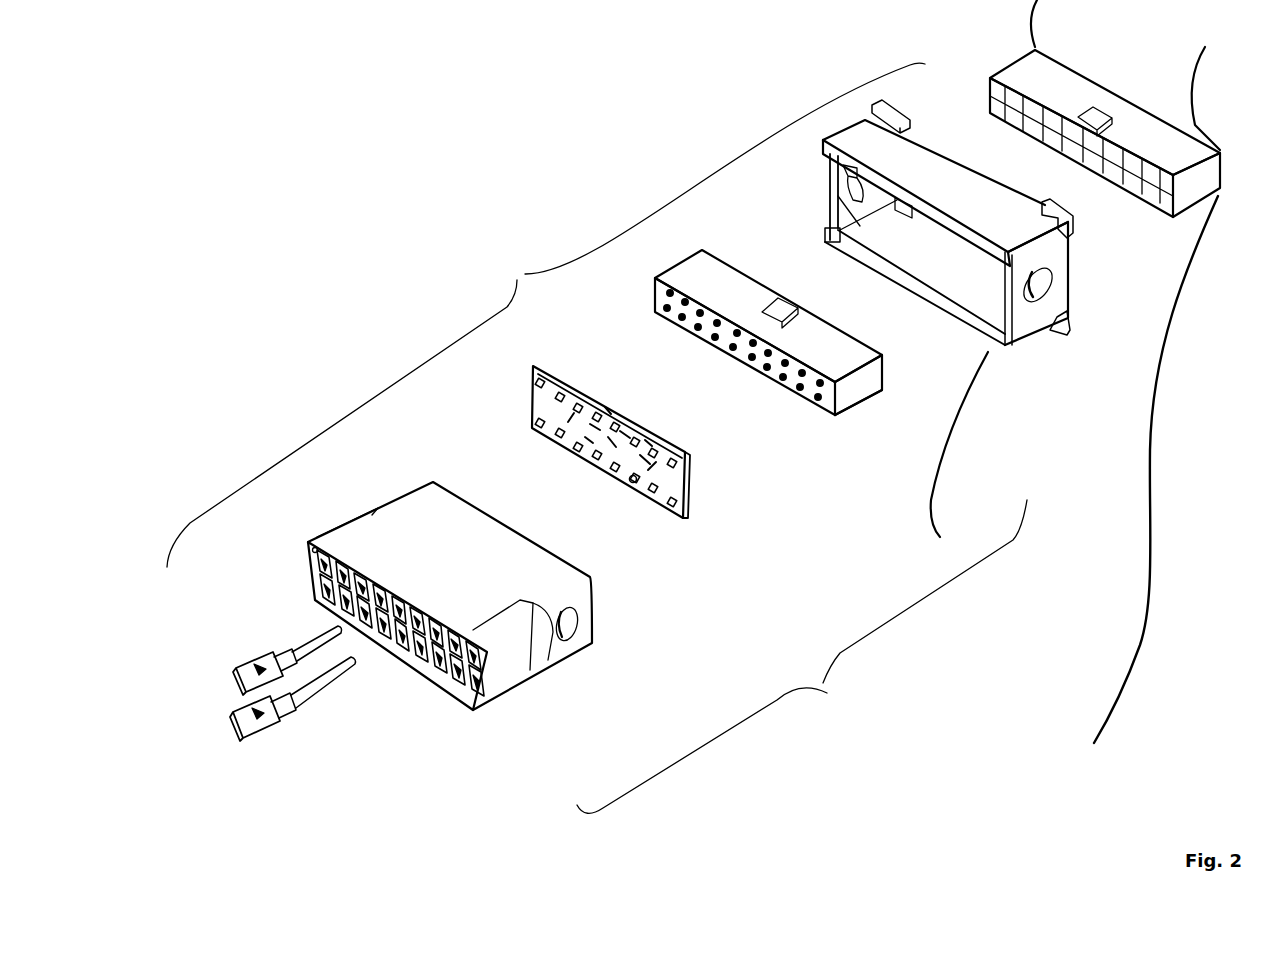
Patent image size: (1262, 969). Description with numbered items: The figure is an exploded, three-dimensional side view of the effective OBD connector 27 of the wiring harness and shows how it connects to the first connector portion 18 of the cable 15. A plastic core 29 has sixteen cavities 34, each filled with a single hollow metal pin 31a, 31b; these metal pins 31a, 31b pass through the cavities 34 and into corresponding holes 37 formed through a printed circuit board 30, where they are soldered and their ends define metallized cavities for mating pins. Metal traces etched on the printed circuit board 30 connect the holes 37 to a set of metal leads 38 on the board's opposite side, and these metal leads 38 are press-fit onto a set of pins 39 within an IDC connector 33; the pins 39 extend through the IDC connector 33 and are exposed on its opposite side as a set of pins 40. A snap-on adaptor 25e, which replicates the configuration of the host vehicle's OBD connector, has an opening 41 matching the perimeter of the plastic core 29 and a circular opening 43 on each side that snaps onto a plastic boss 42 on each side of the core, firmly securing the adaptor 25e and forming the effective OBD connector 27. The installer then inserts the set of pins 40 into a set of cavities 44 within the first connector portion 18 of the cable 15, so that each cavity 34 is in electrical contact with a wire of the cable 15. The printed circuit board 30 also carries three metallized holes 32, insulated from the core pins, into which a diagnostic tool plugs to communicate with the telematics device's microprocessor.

The cable 15 is at (1120, 671).
The first connector portion 18 is at (1017, 50).
The snap-on adaptor 25e is at (1008, 348).
The effective OBD connector 27 is at (526, 274).
The plastic core 29 is at (528, 690).
The printed circuit board 30 is at (677, 522).
The hollow metal pin 31a is at (232, 670).
The hollow metal pin 31b is at (228, 725).
The metallized holes 32 is at (592, 438).
The IDC connector 33 is at (860, 405).
The cavities 34 is at (407, 673).
The holes 37 is at (632, 482).
The metal leads 38 is at (606, 385).
The pins 39 is at (758, 373).
The set of pins 40 is at (750, 273).
The opening 41 is at (952, 285).
The plastic boss 42 is at (577, 617).
The circular opening 43 is at (1052, 287).
The cavities 44 is at (1100, 176).